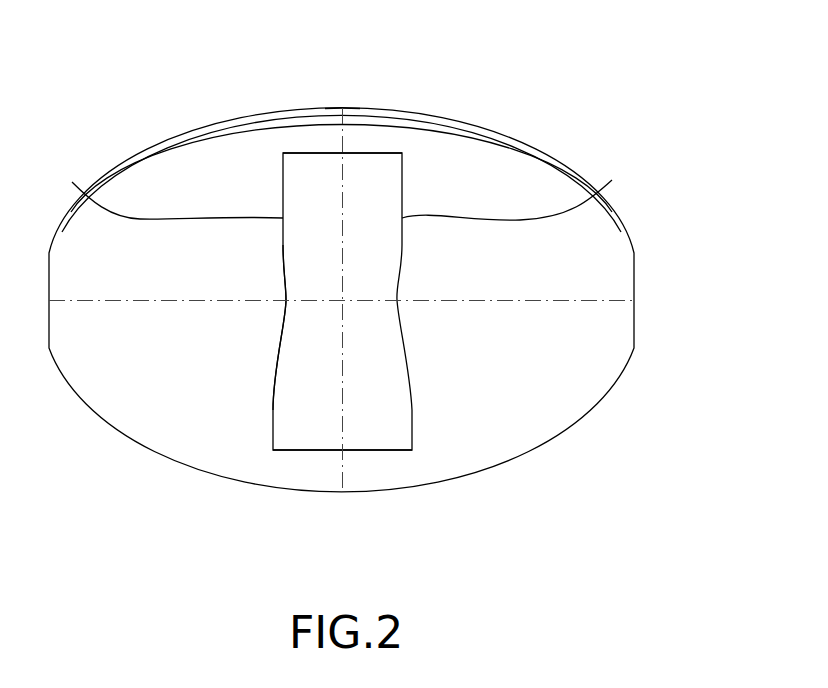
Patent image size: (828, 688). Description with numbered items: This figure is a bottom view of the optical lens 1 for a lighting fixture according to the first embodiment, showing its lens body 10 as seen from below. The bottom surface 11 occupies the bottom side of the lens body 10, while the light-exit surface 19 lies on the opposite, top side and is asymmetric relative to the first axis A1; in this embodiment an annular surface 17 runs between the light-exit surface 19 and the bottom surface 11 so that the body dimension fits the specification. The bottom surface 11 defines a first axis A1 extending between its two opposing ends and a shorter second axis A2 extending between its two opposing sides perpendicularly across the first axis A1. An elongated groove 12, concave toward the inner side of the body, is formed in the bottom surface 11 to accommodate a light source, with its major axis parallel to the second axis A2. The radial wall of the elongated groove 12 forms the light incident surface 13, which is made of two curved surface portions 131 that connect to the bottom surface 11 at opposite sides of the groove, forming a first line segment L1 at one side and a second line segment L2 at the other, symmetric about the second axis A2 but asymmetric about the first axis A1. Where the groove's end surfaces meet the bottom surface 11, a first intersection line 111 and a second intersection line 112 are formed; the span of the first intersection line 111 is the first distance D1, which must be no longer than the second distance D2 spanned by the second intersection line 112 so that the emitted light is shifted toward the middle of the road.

The optical lens 1 is at (600, 138).
The lens body 10 is at (583, 415).
The bottom surface 11 is at (503, 430).
The first intersection line 111 is at (381, 152).
The second intersection line 112 is at (386, 452).
The elongated groove 12 is at (308, 405).
The light incident surface 13 is at (220, 534).
The curved surface portion 131 is at (305, 238).
The annular surface 17 is at (490, 142).
The light-exit surface 19 is at (352, 108).
The first axis A1 is at (565, 300).
The second axis A2 is at (344, 142).
The first line segment L1 is at (525, 192).
The second line segment L2 is at (170, 188).